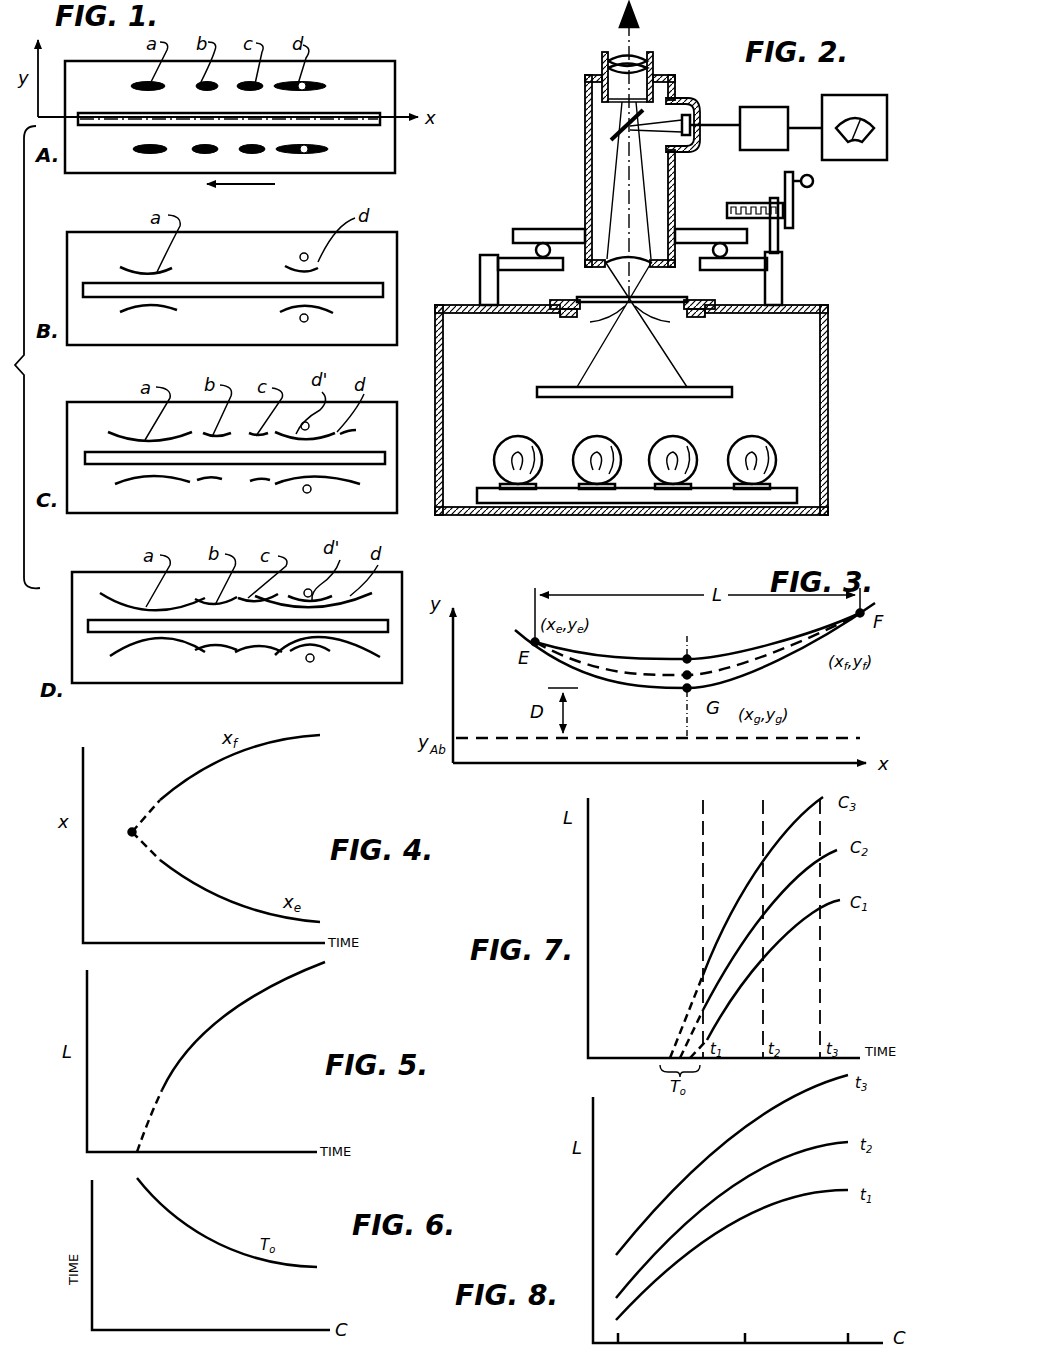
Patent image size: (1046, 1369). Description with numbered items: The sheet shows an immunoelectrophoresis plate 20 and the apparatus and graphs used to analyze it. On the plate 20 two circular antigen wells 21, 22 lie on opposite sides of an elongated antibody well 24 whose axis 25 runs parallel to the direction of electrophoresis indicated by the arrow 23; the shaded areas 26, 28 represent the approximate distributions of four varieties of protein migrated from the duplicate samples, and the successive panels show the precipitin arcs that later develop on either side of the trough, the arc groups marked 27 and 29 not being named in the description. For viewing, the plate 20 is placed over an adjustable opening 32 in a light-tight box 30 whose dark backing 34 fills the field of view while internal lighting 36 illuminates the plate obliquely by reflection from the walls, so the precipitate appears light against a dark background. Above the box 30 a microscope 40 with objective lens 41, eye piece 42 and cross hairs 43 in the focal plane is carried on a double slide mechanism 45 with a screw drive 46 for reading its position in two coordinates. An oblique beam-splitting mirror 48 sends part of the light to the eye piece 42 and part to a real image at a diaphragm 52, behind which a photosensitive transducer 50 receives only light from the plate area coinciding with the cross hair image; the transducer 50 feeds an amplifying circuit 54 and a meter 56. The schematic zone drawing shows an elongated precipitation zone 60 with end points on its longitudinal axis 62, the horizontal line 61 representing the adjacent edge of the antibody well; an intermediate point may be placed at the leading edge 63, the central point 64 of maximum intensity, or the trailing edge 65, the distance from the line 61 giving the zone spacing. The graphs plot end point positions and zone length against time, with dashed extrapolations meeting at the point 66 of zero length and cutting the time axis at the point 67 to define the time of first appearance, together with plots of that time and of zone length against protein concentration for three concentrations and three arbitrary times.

In FIG. 1, the plate 20 is at (371, 57).
In FIG. 2, the plate 20 is at (649, 309).
In FIG. 1, the antigen well 21 is at (306, 76).
In FIG. 1, the antigen well 22 is at (305, 152).
In FIG. 1, the arrow 23 is at (270, 184).
In FIG. 1, the antibody well 24 is at (365, 113).
In FIG. 1, the well axis 25 is at (366, 127).
In FIG. 1, the shaded area 26 is at (112, 85).
In FIG. 1, the upper arc pattern 27 is at (96, 268).
In FIG. 1, the shaded area 28 is at (116, 150).
In FIG. 1, the lower arc pattern 29 is at (113, 307).
In FIG. 2, the light-tight box 30 is at (831, 372).
In FIG. 2, the adjustable opening 32 is at (612, 316).
In FIG. 2, the dark backing 34 is at (721, 387).
In FIG. 2, the internal lighting 36 is at (774, 449).
In FIG. 2, the microscope 40 is at (679, 60).
In FIG. 2, the objective lens 41 is at (607, 258).
In FIG. 2, the eye piece 42 is at (603, 58).
In FIG. 2, the cross hairs 43 is at (617, 102).
In FIG. 2, the double slide mechanism 45 is at (532, 229).
In FIG. 2, the screw drive 46 is at (798, 237).
In FIG. 2, the beam-splitting mirror 48 is at (612, 129).
In FIG. 2, the photosensitive transducer 50 is at (698, 120).
In FIG. 2, the diaphragm 52 is at (687, 114).
In FIG. 2, the amplifying circuit 54 is at (789, 107).
In FIG. 2, the meter 56 is at (866, 96).
In FIG. 3, the zone 60 is at (795, 666).
In FIG. 3, the horizontal line 61 is at (858, 736).
In FIG. 3, the longitudinal axis 62 is at (789, 646).
In FIG. 3, the leading edge 63 is at (685, 690).
In FIG. 3, the central point 64 is at (685, 675).
In FIG. 3, the trailing edge 65 is at (687, 656).
In FIG. 4, the meeting point 66 is at (131, 831).
In FIG. 5, the intersection point 67 is at (135, 1149).